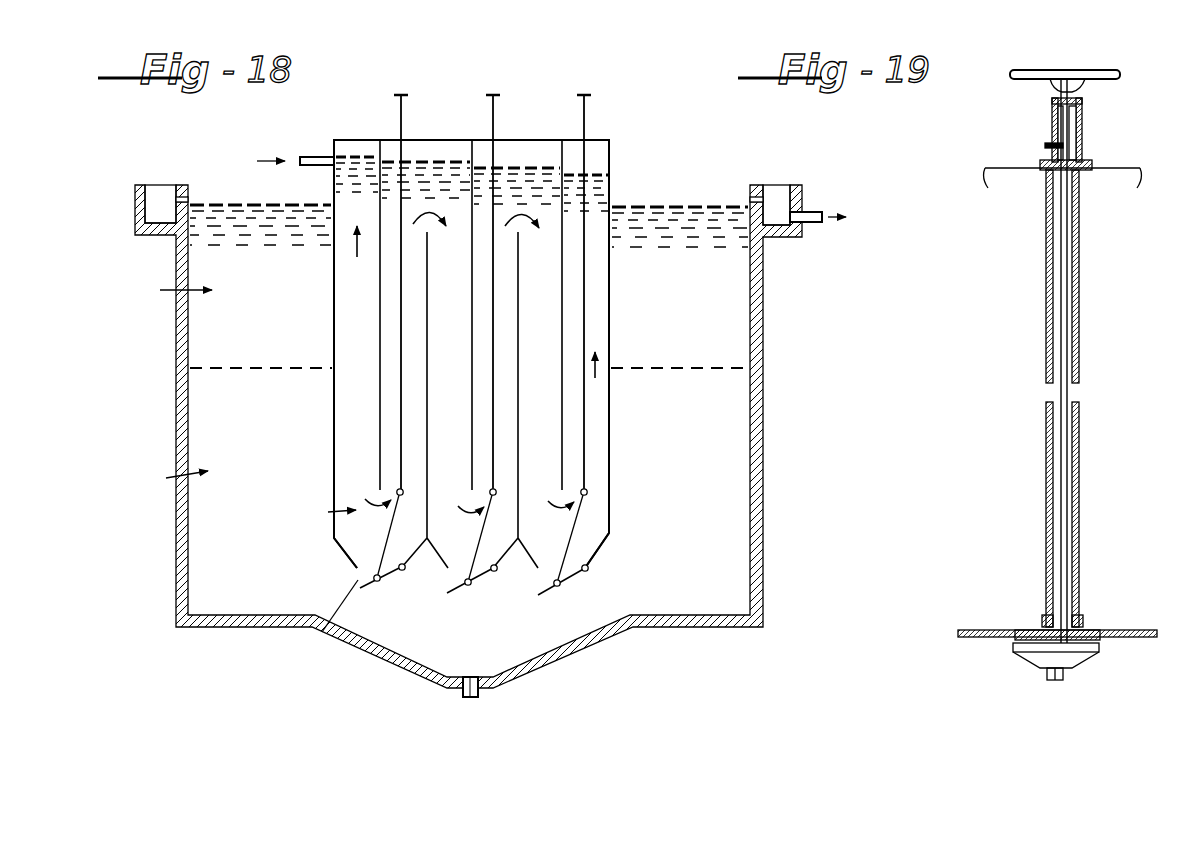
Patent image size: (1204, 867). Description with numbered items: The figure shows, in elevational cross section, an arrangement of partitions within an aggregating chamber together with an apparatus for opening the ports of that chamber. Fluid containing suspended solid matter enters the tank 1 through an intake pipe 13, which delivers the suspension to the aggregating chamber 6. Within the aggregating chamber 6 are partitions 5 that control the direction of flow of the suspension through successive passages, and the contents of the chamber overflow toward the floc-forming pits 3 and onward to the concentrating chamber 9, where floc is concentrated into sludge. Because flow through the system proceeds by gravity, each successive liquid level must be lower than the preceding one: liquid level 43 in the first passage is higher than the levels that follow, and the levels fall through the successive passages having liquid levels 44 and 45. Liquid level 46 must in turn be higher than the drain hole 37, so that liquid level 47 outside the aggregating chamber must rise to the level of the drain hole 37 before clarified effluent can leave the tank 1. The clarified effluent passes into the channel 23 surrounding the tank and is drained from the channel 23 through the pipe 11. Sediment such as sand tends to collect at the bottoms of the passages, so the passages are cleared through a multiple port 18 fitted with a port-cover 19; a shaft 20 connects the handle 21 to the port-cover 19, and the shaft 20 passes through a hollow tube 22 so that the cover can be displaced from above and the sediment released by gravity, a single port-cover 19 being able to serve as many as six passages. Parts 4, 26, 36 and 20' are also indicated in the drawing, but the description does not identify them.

In FIG. 18, the tank 1 is at (178, 328).
In FIG. 18, the floc-forming pits 3 is at (175, 485).
In FIG. 18, the clarified liquid zone 4 is at (173, 290).
In FIG. 18, the partitions 5 is at (378, 332).
In FIG. 18, the aggregating chamber 6 is at (333, 276).
In FIG. 18, the concentrating chamber 9 is at (414, 650).
In FIG. 18, the cleared effluent tube 11 is at (814, 209).
In FIG. 18, the intake pipe 13 is at (306, 156).
In FIG. 18, the multiple port 18 is at (328, 622).
In FIG. 19, the multiple port 18 is at (1029, 632).
In FIG. 18, the port-cover 19 is at (372, 586).
In FIG. 19, the port-cover 19 is at (1076, 656).
In FIG. 18, the shaft 20 is at (513, 292).
In FIG. 19, the shaft 20 is at (1062, 361).
In FIG. 18, the skirt flare 20' is at (476, 558).
In FIG. 18, the handle 21 is at (494, 95).
In FIG. 19, the handle 21 is at (1107, 85).
In FIG. 19, the hollow tube 22 is at (1082, 214).
In FIG. 18, the channel 23 is at (158, 193).
In FIG. 18, the partition walls 26 is at (340, 318).
In FIG. 18, the flow passage 36 is at (324, 517).
In FIG. 18, the drain hole 37 is at (186, 197).
In FIG. 18, the liquid level 43 is at (352, 156).
In FIG. 18, the liquid level 44 is at (443, 160).
In FIG. 18, the liquid level 45 is at (530, 168).
In FIG. 18, the liquid level 46 is at (599, 174).
In FIG. 18, the liquid level 47 is at (680, 204).